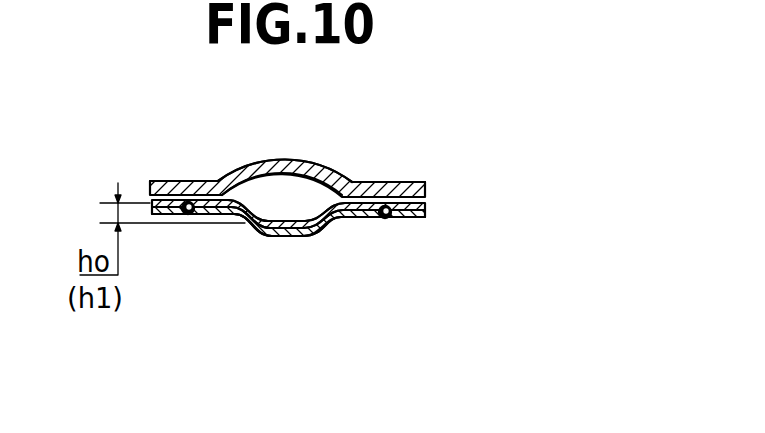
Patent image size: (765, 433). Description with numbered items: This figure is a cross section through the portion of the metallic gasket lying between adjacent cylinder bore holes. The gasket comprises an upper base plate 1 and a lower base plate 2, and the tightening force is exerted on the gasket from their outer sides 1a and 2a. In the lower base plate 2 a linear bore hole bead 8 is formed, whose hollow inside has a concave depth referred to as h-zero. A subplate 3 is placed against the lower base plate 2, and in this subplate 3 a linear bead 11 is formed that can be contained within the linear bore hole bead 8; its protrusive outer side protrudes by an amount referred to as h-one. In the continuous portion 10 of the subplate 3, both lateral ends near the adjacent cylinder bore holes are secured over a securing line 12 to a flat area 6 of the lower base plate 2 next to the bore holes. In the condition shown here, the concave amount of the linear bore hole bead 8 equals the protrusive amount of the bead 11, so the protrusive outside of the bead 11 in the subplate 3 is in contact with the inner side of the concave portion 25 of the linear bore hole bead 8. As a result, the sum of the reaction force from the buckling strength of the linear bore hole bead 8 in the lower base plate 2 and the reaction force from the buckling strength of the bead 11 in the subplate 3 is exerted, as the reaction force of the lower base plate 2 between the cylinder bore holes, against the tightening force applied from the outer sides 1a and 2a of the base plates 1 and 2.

The base plate 1 is at (426, 188).
The outer side of base plate 1 1a is at (362, 183).
The lower base plate 2 is at (428, 218).
The outer side of base plate 2 2a is at (406, 220).
The subplate 3 is at (428, 204).
The flat area 6 is at (205, 182).
The linear bore hole bead 8 is at (284, 160).
The continuous portion 10 is at (361, 217).
The linear bead 11 is at (258, 222).
The securing line 12 is at (188, 203).
The concave portion 25 is at (291, 186).